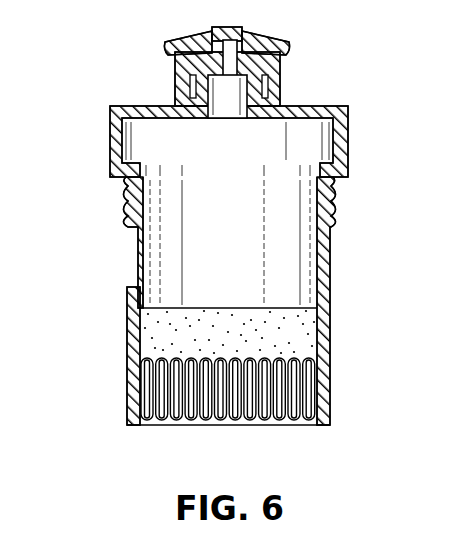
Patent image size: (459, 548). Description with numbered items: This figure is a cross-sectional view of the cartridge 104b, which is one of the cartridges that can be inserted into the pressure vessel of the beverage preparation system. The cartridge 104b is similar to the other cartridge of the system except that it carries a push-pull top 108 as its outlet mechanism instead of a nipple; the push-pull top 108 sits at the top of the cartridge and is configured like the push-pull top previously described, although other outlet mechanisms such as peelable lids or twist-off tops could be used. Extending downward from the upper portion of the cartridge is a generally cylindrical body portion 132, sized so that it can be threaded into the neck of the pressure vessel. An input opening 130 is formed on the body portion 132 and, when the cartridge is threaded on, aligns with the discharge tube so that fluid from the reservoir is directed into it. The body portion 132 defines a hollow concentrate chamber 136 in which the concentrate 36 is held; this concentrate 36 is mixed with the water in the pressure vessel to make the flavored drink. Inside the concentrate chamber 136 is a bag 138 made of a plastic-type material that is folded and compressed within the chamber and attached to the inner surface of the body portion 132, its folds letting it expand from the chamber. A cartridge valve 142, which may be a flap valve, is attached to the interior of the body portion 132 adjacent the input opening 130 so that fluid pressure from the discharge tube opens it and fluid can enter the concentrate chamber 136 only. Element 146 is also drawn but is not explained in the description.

The concentrate 36 is at (292, 332).
The cartridge 104b is at (348, 133).
The push-pull top 108 is at (284, 47).
The input opening 130 is at (138, 247).
The body portion 132 is at (323, 370).
The concentrate chamber 136 is at (290, 242).
The bag 138 is at (272, 426).
The cartridge valve 142 is at (135, 272).
The coil ends 146 is at (200, 426).